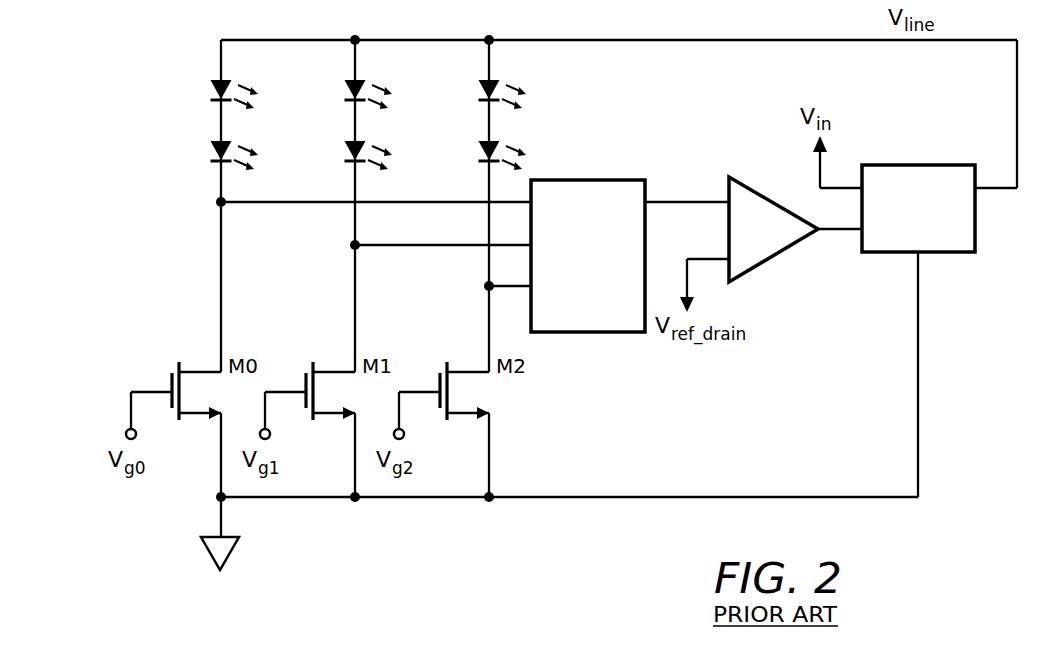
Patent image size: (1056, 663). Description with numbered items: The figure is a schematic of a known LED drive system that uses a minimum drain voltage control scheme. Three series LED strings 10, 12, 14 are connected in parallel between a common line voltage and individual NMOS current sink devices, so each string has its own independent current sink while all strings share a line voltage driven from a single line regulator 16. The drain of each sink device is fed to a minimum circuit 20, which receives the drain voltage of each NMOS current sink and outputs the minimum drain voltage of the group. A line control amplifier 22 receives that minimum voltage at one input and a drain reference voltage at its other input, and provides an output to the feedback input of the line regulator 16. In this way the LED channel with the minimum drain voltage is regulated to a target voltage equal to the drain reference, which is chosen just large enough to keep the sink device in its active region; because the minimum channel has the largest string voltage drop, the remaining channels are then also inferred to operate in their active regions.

The series LED string 10 is at (200, 122).
The series LED string 12 is at (332, 122).
The series LED string 14 is at (465, 122).
The line regulator 16 is at (933, 252).
The minimum circuit 20 is at (603, 180).
The line control amplifier 22 is at (775, 258).